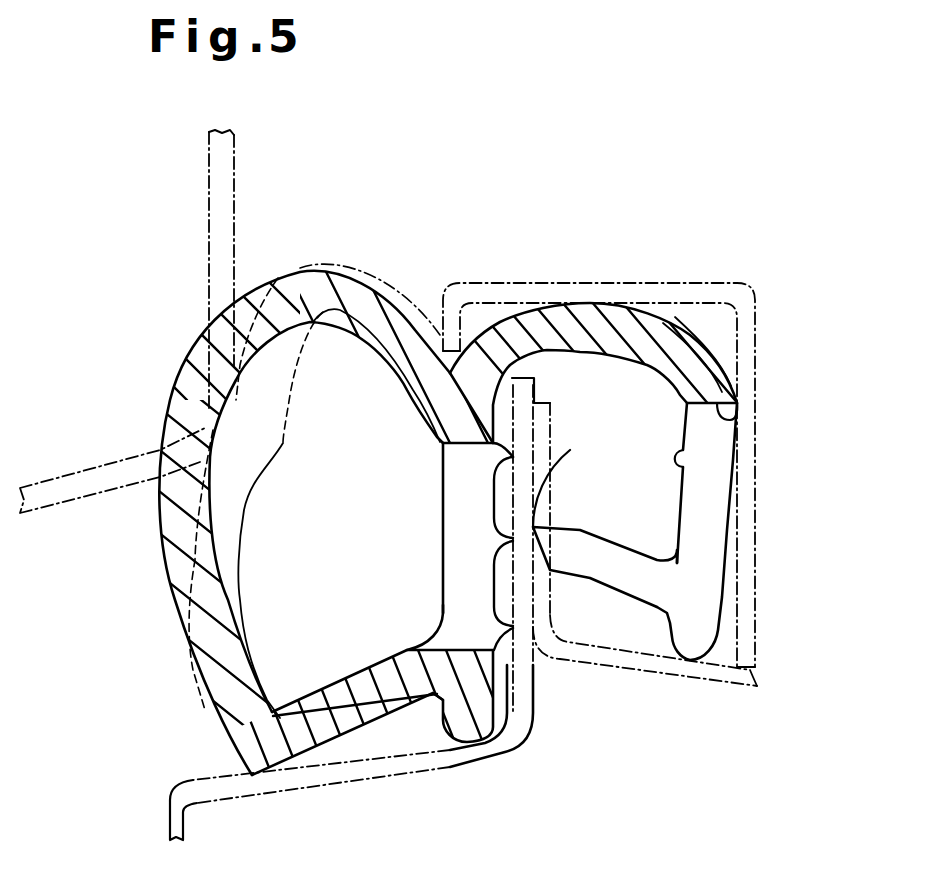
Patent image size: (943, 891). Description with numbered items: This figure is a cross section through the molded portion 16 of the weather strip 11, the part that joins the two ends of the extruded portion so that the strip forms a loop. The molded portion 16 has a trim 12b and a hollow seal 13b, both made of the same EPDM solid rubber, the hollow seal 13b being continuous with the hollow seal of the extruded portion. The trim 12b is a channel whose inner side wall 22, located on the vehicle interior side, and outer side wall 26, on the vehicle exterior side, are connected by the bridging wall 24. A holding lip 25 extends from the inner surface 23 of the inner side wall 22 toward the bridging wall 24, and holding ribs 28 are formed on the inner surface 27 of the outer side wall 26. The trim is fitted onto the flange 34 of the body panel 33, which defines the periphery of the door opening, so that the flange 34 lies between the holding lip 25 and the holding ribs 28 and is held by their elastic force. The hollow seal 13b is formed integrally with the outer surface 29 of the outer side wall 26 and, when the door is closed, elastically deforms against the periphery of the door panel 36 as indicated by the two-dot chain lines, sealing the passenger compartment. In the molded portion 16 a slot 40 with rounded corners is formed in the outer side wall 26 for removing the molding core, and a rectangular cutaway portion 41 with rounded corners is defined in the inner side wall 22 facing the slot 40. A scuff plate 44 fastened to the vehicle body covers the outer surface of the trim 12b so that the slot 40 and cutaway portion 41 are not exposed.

The weather strip 11 is at (495, 241).
The trim 12b is at (636, 306).
The hollow seal 13b is at (166, 597).
The molded portion 16 is at (653, 773).
The inner side wall 22 is at (721, 546).
The inner surface 23 is at (700, 460).
The bridging wall 24 is at (563, 306).
The holding lip 25 is at (599, 547).
The outer side wall 26 is at (441, 523).
The inner surface 27 is at (530, 704).
The holding ribs 28 is at (513, 452).
The outer surface 29 is at (433, 712).
The body panel 33 is at (505, 760).
The flange 34 is at (553, 414).
The door panel 36 is at (237, 178).
The slot 40 is at (441, 630).
The cutaway portion 41 is at (740, 415).
The scuff plate 44 is at (757, 360).